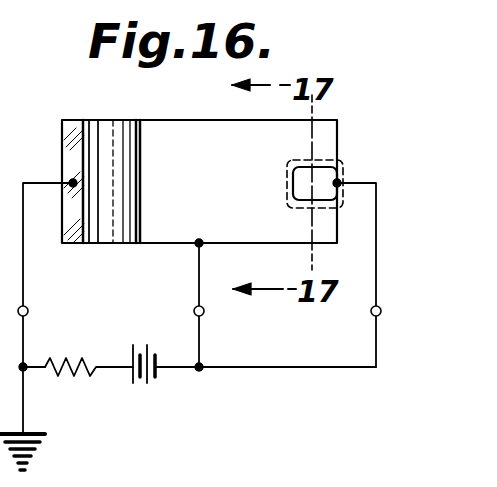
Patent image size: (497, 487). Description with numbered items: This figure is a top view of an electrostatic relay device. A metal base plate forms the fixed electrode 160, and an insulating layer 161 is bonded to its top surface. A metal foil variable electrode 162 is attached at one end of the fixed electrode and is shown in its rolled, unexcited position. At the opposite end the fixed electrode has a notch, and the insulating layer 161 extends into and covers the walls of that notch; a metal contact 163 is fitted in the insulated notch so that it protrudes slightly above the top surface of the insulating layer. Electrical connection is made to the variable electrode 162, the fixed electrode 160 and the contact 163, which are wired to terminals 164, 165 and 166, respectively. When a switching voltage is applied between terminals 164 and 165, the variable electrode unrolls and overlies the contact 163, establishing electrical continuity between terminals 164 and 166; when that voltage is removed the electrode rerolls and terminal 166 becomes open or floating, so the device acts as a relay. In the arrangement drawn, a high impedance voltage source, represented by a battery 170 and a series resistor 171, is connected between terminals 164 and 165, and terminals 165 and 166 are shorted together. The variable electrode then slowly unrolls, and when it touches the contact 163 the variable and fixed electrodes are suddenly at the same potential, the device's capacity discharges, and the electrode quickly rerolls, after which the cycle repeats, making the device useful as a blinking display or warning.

The fixed electrode 160 is at (337, 143).
The insulating layer 161 is at (192, 143).
The variable electrode 162 is at (115, 140).
The contact 163 is at (322, 177).
The terminal 164 is at (28, 311).
The terminal 165 is at (204, 312).
The terminal 166 is at (381, 311).
The battery 170 is at (140, 385).
The series resistor 171 is at (70, 373).